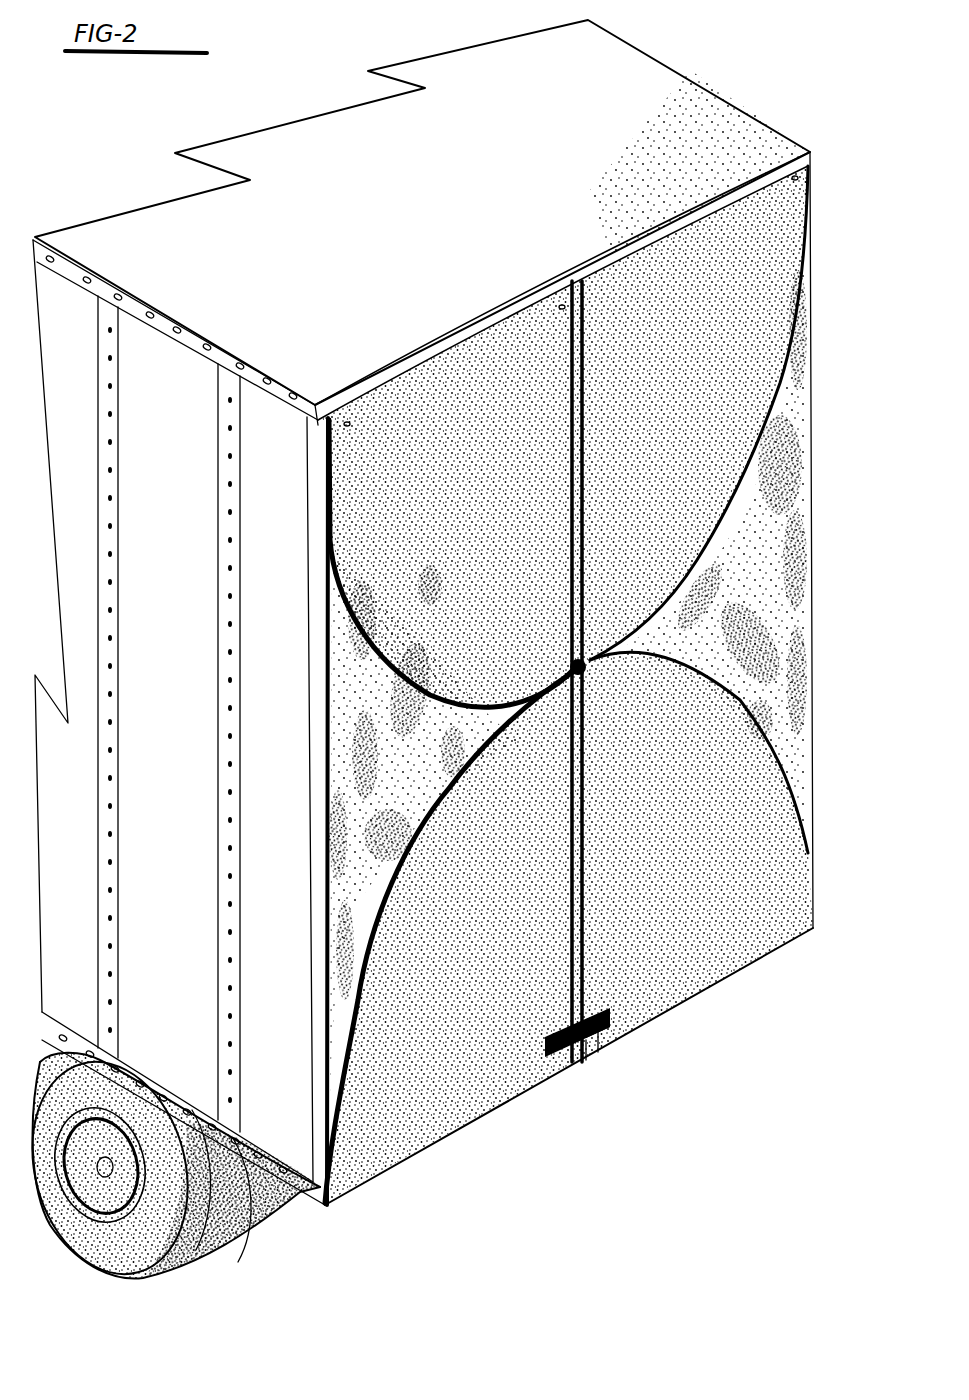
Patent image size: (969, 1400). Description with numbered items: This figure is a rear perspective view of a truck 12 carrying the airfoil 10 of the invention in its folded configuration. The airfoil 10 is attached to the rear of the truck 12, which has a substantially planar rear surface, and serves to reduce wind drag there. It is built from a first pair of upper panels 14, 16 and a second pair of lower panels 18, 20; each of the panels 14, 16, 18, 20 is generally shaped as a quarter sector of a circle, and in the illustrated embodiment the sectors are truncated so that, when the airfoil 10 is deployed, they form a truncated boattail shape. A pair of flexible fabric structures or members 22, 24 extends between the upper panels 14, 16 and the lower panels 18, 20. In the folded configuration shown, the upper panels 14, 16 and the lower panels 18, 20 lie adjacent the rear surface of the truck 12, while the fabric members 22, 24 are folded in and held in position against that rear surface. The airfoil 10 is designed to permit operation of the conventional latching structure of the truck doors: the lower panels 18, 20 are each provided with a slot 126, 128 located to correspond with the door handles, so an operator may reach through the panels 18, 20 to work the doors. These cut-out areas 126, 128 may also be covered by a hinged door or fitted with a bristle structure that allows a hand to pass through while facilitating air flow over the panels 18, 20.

The airfoil 10 is at (824, 532).
The truck 12 is at (721, 126).
The upper panel 14 is at (378, 501).
The upper panel 16 is at (618, 293).
The lower panel 18 is at (433, 1115).
The lower panel 20 is at (678, 968).
The flexible fabric member 22 is at (350, 704).
The flexible fabric member 24 is at (787, 620).
The slot 126 is at (563, 1052).
The slot 128 is at (608, 1036).